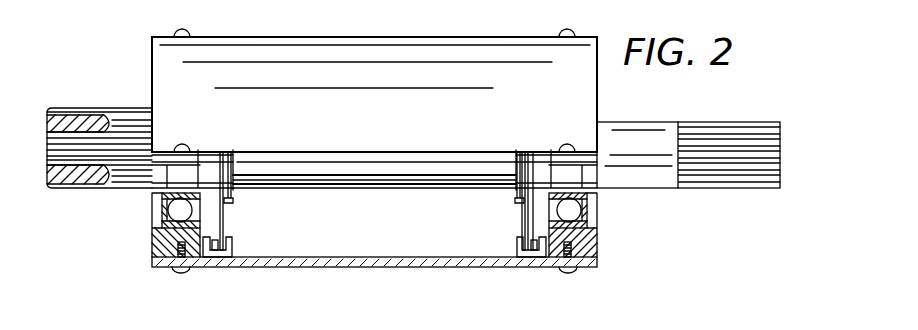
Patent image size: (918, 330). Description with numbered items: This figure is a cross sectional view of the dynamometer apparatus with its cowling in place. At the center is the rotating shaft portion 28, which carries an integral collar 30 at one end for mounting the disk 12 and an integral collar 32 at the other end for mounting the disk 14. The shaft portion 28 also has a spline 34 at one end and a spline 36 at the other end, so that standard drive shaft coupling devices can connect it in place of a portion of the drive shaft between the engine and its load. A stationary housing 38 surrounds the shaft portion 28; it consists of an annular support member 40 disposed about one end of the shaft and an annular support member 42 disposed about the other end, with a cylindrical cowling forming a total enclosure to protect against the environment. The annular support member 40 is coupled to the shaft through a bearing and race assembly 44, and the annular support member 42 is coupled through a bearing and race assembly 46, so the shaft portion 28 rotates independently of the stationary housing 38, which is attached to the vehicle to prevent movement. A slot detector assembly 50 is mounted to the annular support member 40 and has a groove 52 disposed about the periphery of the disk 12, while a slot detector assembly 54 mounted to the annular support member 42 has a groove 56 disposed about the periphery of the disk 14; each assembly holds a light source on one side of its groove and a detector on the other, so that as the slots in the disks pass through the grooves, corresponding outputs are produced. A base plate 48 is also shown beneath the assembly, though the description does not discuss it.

The disk 12 is at (224, 218).
The disk 14 is at (522, 224).
The shaft portion 28 is at (360, 172).
The integral collar 30 is at (234, 201).
The integral collar 32 is at (515, 201).
The spline 34 is at (104, 116).
The spline 36 is at (725, 116).
The stationary housing 38 is at (420, 39).
The annular support member 40 is at (152, 250).
The annular support member 42 is at (592, 250).
The bearing and race assembly 44 is at (168, 212).
The bearing and race assembly 46 is at (588, 212).
The base plate 48 is at (368, 269).
The slot detector assembly 50 is at (212, 253).
The groove 52 is at (229, 256).
The slot detector assembly 54 is at (540, 258).
The groove 56 is at (520, 256).